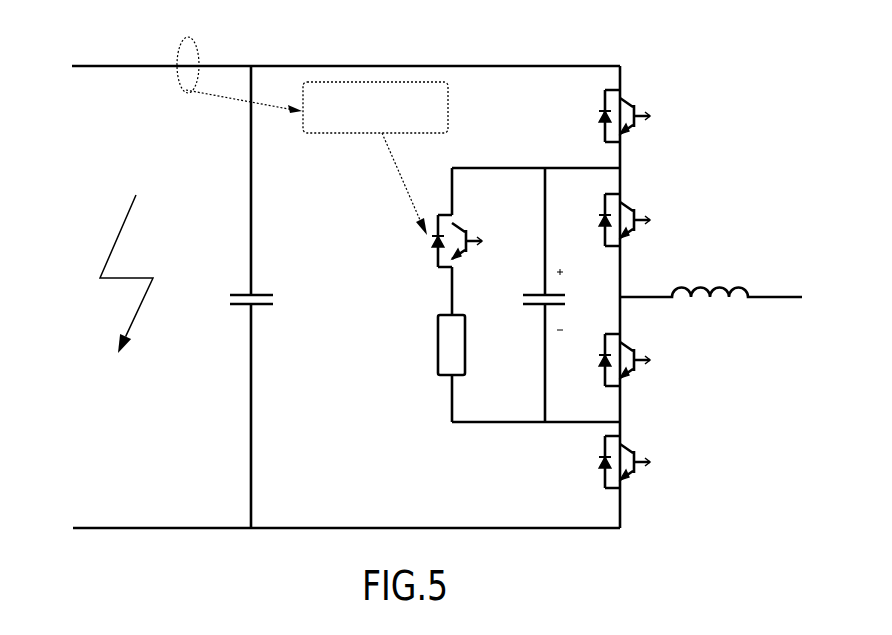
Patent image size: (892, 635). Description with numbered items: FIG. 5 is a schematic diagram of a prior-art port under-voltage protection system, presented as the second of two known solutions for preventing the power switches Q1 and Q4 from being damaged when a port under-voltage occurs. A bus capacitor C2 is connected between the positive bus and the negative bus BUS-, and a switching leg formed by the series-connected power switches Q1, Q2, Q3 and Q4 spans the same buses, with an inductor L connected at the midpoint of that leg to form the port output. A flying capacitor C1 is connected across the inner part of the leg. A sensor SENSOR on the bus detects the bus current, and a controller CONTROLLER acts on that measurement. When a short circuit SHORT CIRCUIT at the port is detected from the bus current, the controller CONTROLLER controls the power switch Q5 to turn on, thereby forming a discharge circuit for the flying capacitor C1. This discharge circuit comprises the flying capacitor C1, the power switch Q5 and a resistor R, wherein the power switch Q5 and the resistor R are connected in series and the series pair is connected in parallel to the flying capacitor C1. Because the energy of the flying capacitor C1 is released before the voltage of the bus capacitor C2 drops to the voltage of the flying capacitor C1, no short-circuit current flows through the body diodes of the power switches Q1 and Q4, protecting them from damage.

The power switch Q1 is at (633, 125).
The power switch Q2 is at (636, 229).
The power switch Q3 is at (636, 370).
The power switch Q4 is at (633, 473).
The power switch Q5 is at (437, 250).
The resistor R is at (436, 345).
The flying capacitor C1 is at (533, 295).
The capacitor C2 is at (237, 297).
The inductor L is at (711, 313).
The sensor SENSOR is at (233, 65).
The controller CONTROLLER is at (317, 158).
The negative bus BUS- is at (346, 513).
The short circuit SHORT CIRCUIT is at (121, 316).